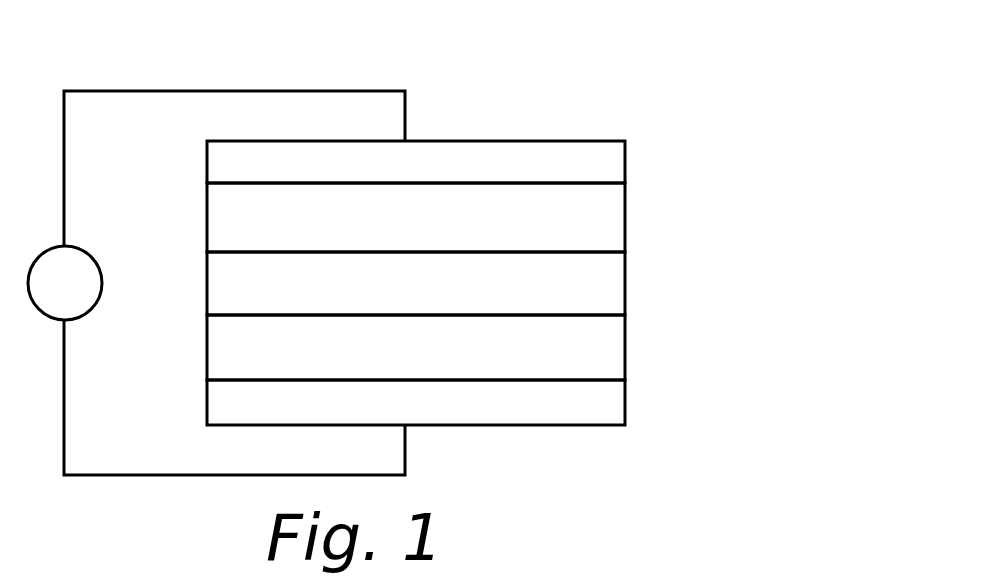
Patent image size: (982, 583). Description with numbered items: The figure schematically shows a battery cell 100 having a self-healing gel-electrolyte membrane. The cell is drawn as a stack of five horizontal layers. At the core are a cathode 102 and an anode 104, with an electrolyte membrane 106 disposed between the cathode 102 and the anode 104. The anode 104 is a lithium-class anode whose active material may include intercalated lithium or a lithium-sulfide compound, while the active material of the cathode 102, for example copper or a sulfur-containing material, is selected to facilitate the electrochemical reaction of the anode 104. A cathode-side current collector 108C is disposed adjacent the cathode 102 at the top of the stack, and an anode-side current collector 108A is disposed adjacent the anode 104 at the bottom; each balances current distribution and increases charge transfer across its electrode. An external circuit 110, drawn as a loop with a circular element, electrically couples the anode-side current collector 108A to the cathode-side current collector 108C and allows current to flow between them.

The battery cell 100 is at (558, 49).
The external circuit 110 is at (100, 90).
The cathode-side current collector 108C is at (615, 162).
The cathode 102 is at (615, 215).
The electrolyte membrane 106 is at (615, 280).
The anode 104 is at (615, 345).
The anode-side current collector 108A is at (615, 403).